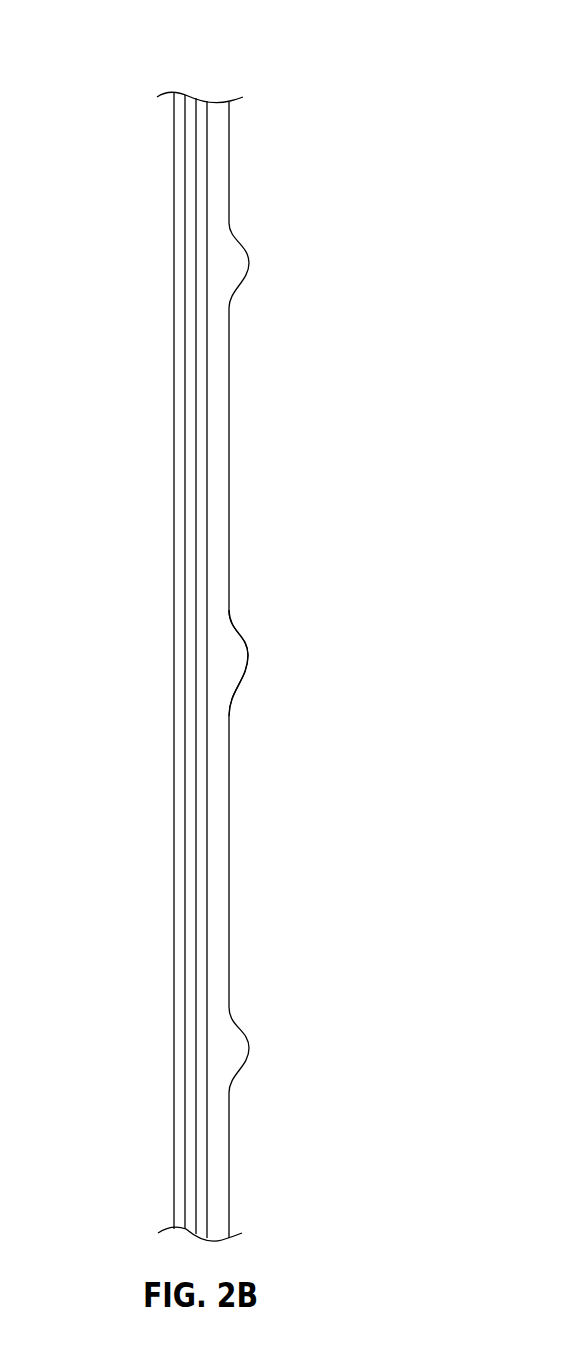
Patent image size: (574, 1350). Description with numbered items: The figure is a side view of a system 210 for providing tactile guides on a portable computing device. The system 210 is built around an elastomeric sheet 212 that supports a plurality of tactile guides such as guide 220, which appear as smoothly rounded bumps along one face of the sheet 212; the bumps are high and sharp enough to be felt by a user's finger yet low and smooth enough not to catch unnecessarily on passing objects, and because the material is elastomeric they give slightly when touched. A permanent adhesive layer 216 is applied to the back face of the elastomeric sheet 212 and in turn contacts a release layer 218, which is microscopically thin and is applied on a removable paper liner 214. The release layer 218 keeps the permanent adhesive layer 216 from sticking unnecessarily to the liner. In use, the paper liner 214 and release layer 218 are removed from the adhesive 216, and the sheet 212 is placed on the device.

The system 210 is at (245, 628).
The elastomeric sheet 212 is at (217, 104).
The paper liner 214 is at (186, 94).
The permanent adhesive layer 216 is at (204, 100).
The release layer 218 is at (198, 100).
The tactile guide 220 is at (249, 656).